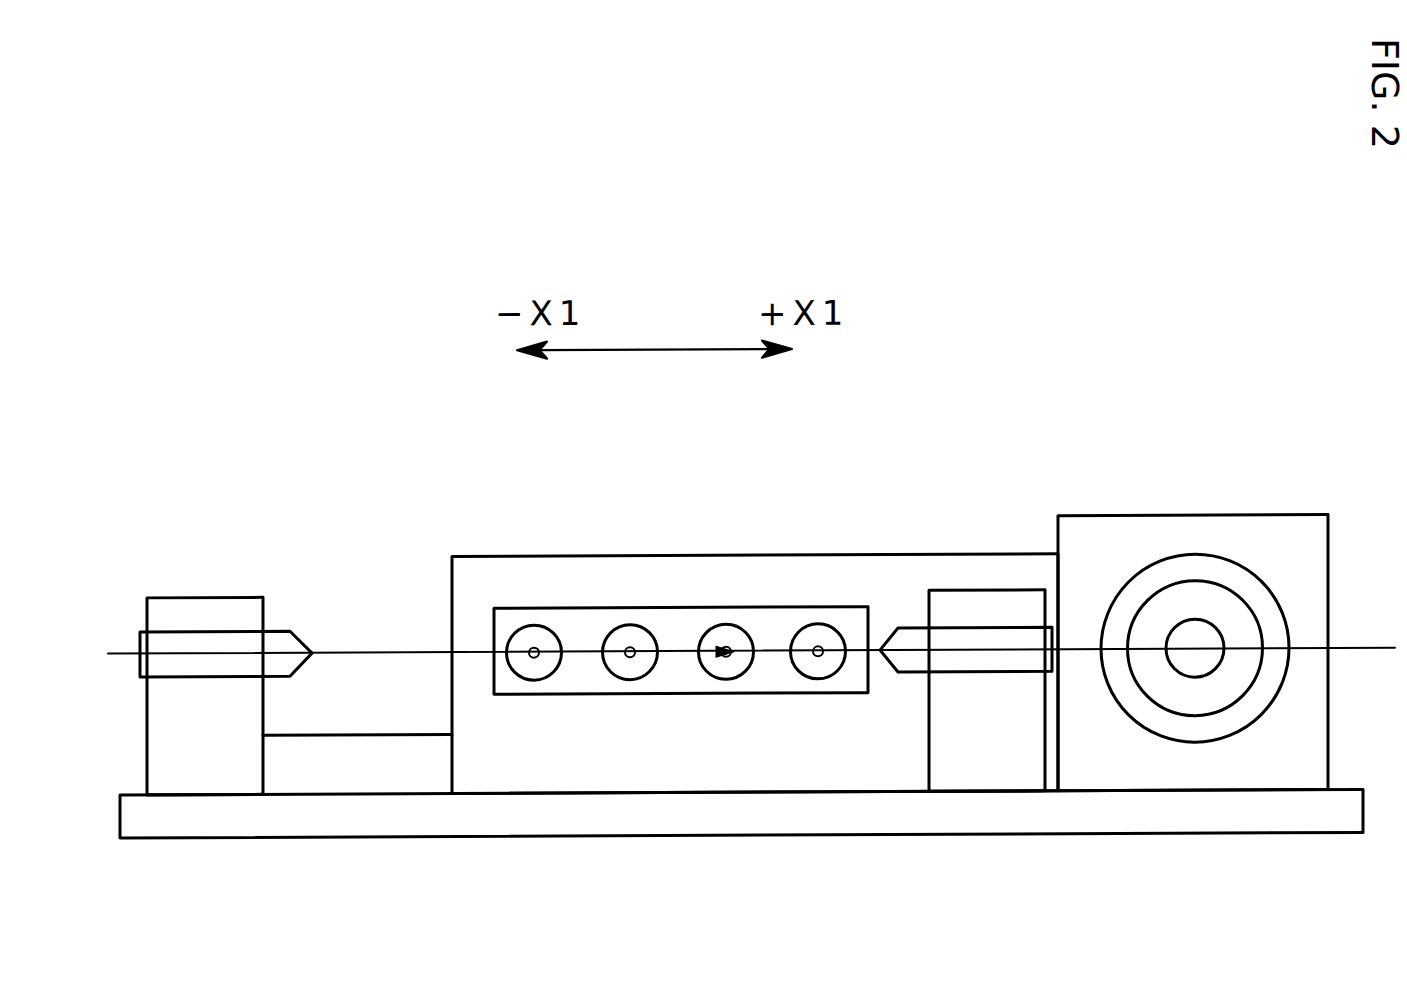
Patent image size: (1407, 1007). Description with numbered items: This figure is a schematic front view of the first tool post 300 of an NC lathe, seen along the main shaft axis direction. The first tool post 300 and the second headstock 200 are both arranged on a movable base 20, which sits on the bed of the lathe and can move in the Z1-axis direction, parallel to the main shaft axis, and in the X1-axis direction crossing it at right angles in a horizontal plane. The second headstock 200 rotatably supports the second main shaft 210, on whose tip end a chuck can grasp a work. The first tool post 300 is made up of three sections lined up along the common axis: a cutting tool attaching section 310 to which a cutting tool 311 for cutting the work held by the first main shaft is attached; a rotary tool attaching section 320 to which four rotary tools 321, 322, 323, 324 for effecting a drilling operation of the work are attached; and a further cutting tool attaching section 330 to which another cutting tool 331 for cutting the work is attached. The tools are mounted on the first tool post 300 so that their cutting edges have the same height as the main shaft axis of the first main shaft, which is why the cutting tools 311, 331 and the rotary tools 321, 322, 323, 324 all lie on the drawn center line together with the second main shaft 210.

The movable base 20 is at (352, 826).
The second headstock 200 is at (1166, 503).
The second main shaft 210 is at (1208, 700).
The first tool post 300 is at (298, 439).
The cutting tool attaching section 310 is at (193, 584).
The cutting tool 311 is at (252, 658).
The rotary tool attaching section 320 is at (655, 593).
The rotary tool 321 is at (527, 682).
The rotary tool 322 is at (628, 682).
The rotary tool 323 is at (727, 668).
The rotary tool 324 is at (830, 668).
The cutting tool attaching section 330 is at (949, 583).
The cutting tool 331 is at (970, 650).